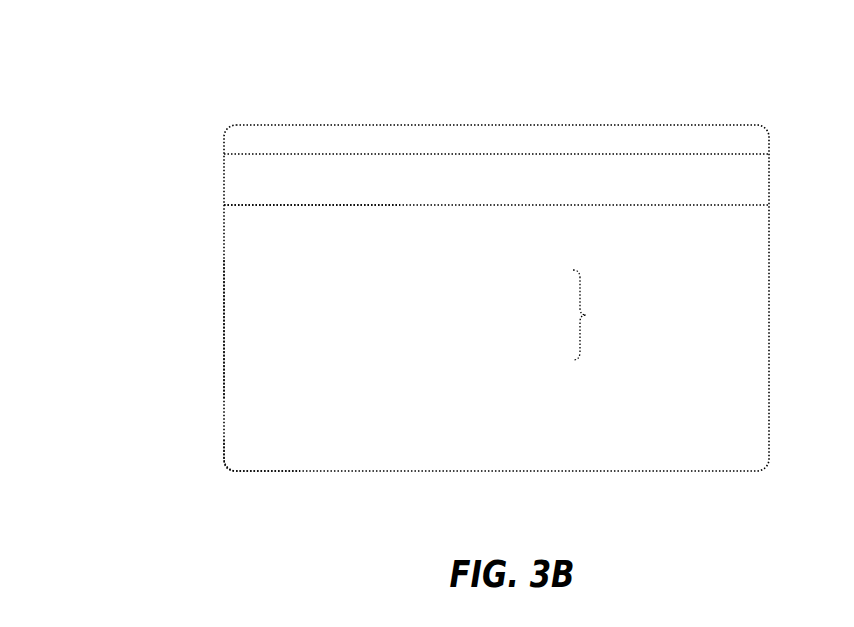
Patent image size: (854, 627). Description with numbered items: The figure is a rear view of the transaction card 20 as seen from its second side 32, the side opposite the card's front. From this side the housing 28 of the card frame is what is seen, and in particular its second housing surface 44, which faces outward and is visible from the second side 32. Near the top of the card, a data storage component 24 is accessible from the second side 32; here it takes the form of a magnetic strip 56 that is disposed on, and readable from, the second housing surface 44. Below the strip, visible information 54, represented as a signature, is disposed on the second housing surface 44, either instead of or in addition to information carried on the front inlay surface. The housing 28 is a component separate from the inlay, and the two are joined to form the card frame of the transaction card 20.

The transaction card 20 is at (499, 58).
The magnetic strip 56 is at (343, 193).
The data storage component 24 is at (352, 214).
The second side 32 is at (156, 333).
The housing component 28 is at (222, 472).
The visible information 54 is at (533, 315).
The second housing surface 44 is at (686, 396).